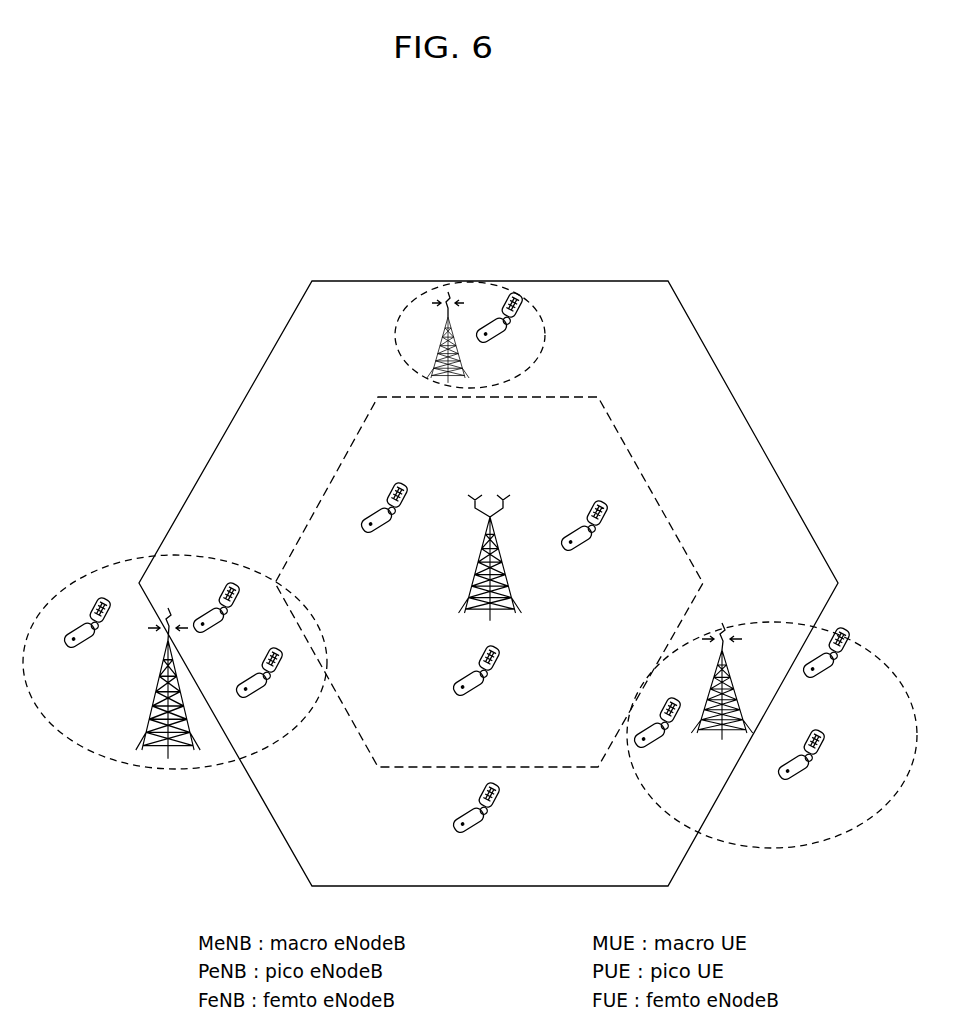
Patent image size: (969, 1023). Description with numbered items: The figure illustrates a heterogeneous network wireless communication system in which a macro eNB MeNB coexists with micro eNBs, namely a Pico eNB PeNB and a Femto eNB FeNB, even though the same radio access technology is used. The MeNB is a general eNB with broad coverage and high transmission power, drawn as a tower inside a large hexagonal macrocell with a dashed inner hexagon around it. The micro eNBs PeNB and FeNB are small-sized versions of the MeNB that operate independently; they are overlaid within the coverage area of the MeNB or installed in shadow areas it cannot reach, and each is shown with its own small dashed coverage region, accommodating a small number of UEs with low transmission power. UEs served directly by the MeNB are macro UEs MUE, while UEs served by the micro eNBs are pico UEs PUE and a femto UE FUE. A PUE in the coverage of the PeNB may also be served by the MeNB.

The macro eNB MeNB is at (489, 529).
The Pico eNB PeNB is at (470, 701).
The Femto eNB FeNB is at (470, 318).
The Macro UE MUE is at (484, 671).
The Pico UE PUE is at (457, 697).
The Femto UE FUE is at (499, 332).